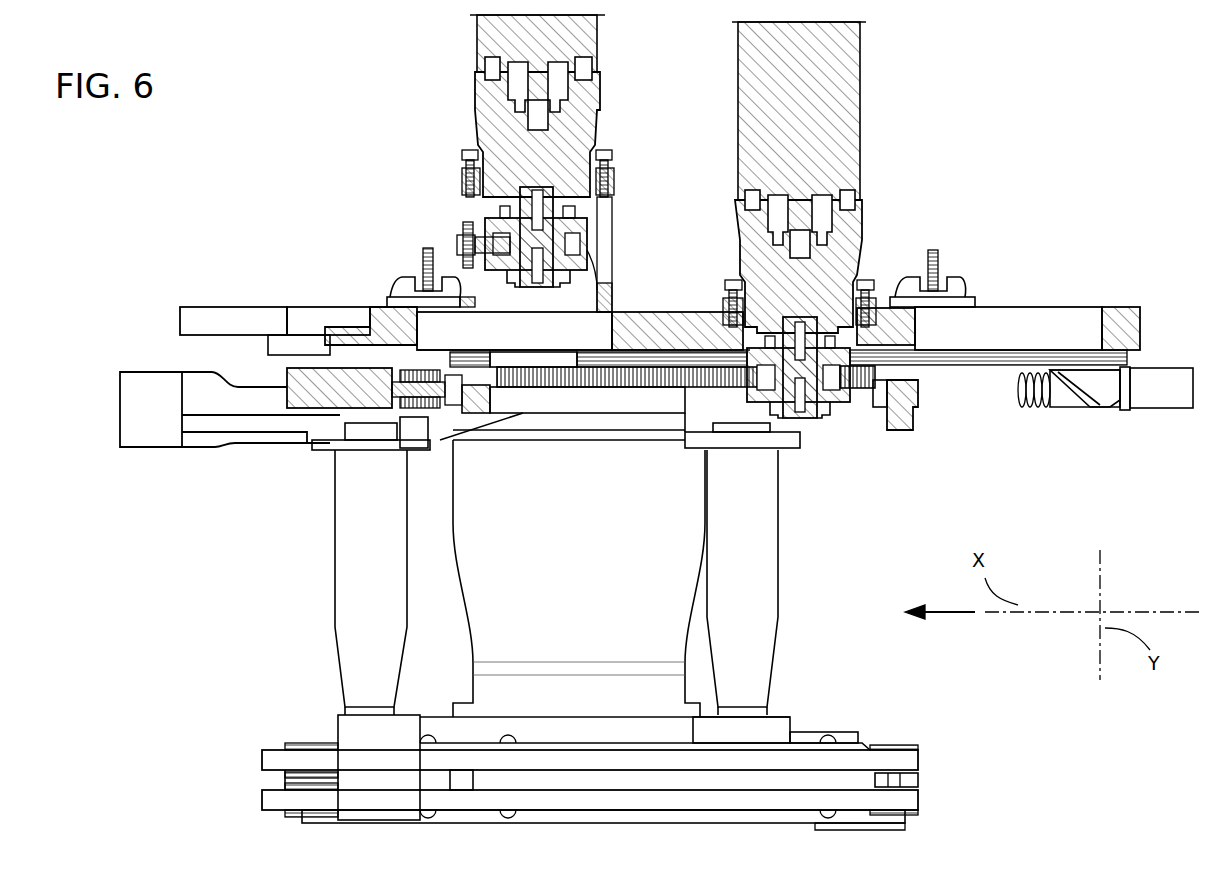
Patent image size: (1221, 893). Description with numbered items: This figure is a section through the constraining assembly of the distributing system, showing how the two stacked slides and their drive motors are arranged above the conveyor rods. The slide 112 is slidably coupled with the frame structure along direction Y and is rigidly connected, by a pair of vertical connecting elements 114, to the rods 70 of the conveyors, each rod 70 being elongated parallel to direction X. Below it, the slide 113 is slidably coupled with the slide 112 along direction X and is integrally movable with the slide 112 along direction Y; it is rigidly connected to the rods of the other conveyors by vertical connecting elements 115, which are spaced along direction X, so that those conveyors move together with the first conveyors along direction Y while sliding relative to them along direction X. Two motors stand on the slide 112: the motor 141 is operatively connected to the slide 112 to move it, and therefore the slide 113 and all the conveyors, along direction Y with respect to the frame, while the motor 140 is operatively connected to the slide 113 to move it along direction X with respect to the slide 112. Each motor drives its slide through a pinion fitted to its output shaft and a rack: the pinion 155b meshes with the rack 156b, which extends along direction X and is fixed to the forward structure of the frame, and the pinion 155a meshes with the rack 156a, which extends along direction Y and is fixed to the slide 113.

The rod 70 is at (525, 725).
The slide 112 is at (1130, 315).
The slide 113 is at (903, 412).
The vertical connecting element 114 is at (670, 527).
The vertical connecting element 115 is at (348, 542).
The motor 140 is at (827, 92).
The motor 141 is at (477, 43).
The pinion 155a is at (838, 395).
The pinion 155b is at (583, 228).
The rack 156a is at (857, 388).
The rack 156b is at (460, 236).